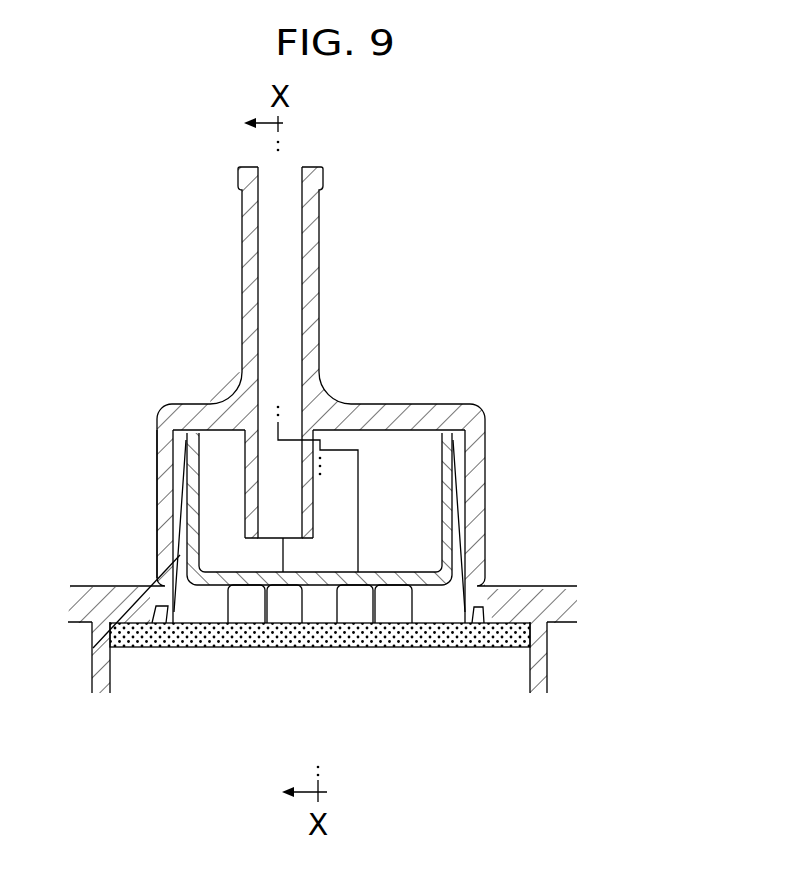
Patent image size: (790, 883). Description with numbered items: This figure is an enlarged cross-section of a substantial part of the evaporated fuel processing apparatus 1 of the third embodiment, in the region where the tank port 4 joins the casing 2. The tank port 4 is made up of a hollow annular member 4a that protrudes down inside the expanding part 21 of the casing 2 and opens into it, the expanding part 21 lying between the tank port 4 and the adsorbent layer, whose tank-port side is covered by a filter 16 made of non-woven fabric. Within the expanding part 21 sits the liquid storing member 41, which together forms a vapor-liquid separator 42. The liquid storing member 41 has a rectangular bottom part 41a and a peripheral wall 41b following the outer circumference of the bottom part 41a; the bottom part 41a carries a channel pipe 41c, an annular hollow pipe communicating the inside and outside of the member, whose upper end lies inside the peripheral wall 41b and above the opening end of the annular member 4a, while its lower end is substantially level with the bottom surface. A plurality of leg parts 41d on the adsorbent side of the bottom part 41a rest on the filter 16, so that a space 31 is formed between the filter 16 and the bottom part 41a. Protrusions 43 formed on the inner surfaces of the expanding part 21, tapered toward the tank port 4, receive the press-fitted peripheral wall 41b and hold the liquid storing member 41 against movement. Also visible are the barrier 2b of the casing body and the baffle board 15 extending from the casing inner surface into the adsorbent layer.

The evaporated fuel processing apparatus 1 is at (508, 562).
The casing 2 is at (497, 418).
The barrier 2b is at (100, 677).
The tank port 4 is at (312, 228).
The hollow annular member 4a is at (250, 480).
The baffle board 15 is at (543, 680).
The filter 16 is at (222, 635).
The expanding part 21 is at (165, 523).
The space 31 is at (350, 608).
The liquid storing member 41 is at (170, 557).
The bottom part 41a is at (280, 580).
The peripheral wall 41b is at (452, 547).
The channel pipe 41c is at (323, 496).
The leg parts 41d is at (250, 612).
The vapor-liquid separator 42 is at (369, 405).
The protrusions 43 is at (182, 465).